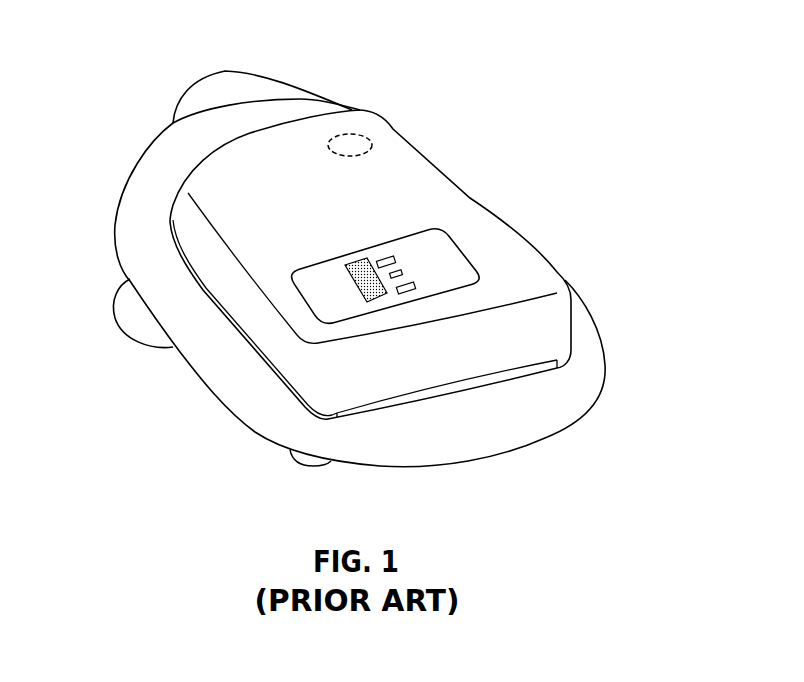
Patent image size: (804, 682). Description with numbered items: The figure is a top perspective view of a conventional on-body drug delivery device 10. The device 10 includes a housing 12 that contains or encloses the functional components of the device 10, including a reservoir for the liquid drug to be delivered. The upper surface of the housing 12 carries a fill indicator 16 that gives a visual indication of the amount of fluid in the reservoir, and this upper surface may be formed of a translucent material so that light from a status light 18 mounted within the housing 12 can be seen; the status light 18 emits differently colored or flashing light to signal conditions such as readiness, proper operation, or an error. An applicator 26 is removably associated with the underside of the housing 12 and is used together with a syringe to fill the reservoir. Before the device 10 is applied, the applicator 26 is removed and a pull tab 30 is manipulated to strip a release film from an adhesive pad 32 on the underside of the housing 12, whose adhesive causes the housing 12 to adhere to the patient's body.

The on-body device 10 is at (330, 267).
The housing 12 is at (530, 257).
The fill indicator 16 is at (352, 284).
The status light 18 is at (350, 133).
The applicator 26 is at (233, 82).
The pull tab 30 is at (128, 313).
The adhesive pad 32 is at (467, 448).